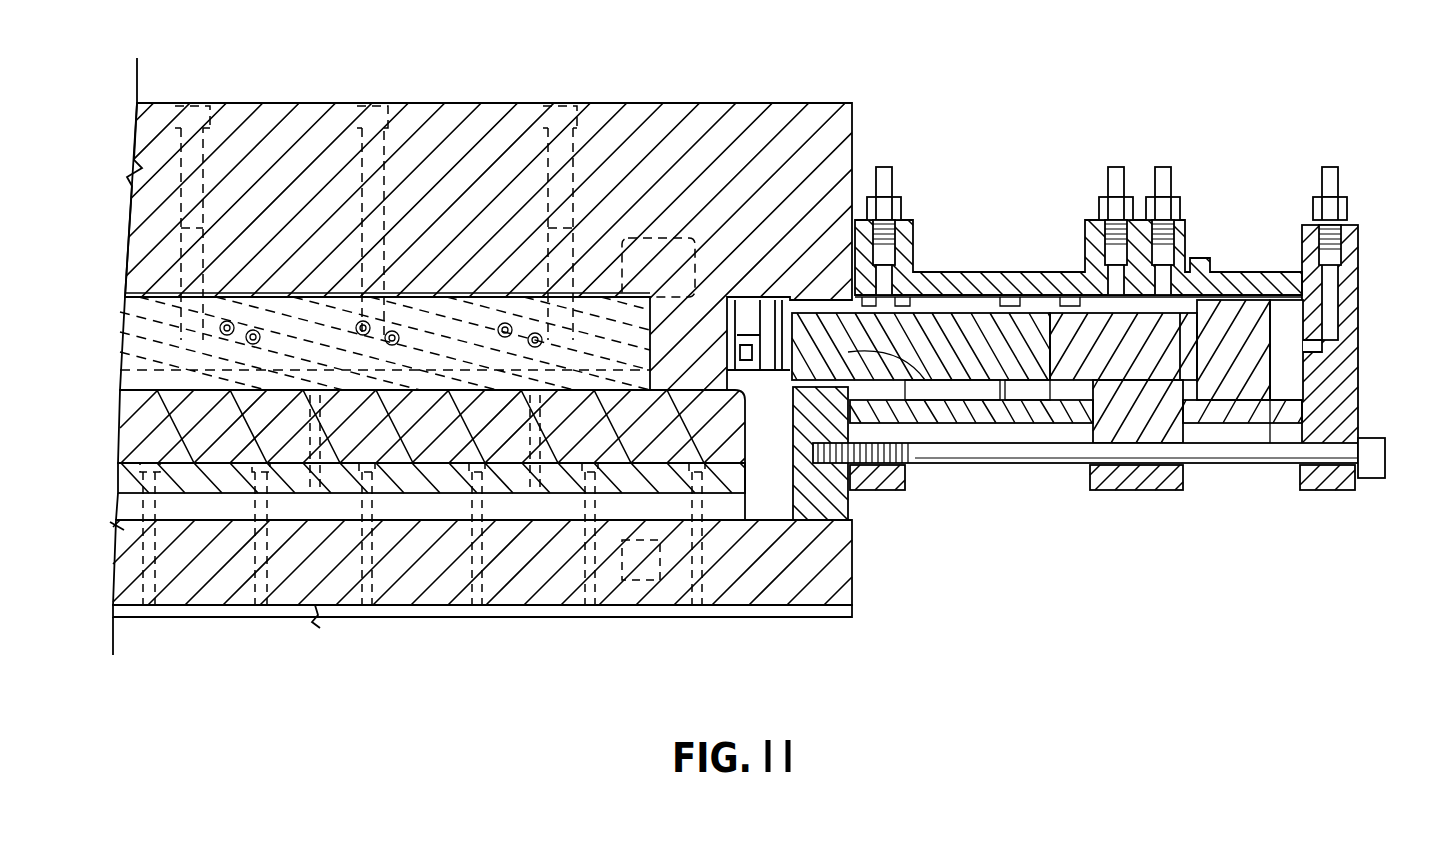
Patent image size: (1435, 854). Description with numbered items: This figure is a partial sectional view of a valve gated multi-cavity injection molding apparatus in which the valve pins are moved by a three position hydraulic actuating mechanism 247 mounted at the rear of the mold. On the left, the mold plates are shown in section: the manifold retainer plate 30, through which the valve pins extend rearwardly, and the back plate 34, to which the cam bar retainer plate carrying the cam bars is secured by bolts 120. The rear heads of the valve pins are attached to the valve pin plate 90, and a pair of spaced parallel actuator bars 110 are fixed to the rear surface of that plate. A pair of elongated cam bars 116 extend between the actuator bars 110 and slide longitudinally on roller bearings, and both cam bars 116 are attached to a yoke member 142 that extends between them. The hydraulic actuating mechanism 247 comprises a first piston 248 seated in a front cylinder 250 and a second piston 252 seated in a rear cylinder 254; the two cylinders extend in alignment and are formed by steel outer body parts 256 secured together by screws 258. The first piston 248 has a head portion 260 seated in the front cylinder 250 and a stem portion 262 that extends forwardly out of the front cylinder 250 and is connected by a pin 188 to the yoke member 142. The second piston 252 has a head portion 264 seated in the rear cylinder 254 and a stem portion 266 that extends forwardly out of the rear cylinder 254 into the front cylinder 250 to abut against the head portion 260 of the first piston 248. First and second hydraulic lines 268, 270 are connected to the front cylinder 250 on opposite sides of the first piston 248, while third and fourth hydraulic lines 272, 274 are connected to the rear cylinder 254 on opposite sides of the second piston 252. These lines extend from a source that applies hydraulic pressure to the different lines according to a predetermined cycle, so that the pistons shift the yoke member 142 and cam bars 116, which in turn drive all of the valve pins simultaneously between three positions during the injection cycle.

The back plate 34 is at (272, 120).
The bolts 120 is at (376, 110).
The cam bars 116 is at (670, 318).
The yoke member 142 is at (737, 305).
The pin 188 is at (775, 305).
The valve pin plate 90 is at (173, 440).
The actuator bars 110 is at (205, 378).
The manifold retainer plate 30 is at (340, 588).
The hydraulic actuating mechanism 247 is at (1386, 505).
The front cylinder 250 is at (955, 300).
The first hydraulic line 268 is at (882, 175).
The second hydraulic line 270 is at (1116, 178).
The third hydraulic line 272 is at (1163, 178).
The fourth hydraulic line 274 is at (1330, 178).
The rear cylinder 254 is at (1285, 365).
The steel outer body parts 256 is at (1340, 394).
The first piston 248 is at (970, 360).
The stem portion 266 is at (1073, 360).
The second piston 252 is at (1177, 355).
The head portion 264 is at (1237, 357).
The head portion 260 is at (1020, 372).
The stem portion 262 is at (950, 420).
The screws 258 is at (1335, 455).